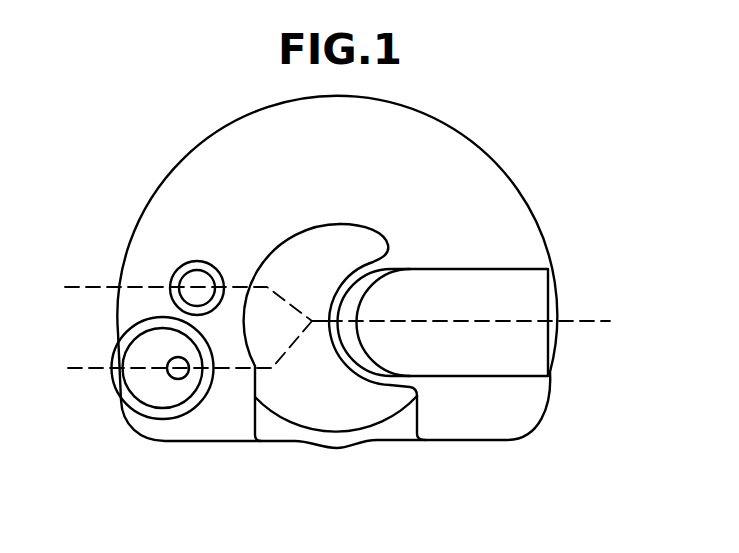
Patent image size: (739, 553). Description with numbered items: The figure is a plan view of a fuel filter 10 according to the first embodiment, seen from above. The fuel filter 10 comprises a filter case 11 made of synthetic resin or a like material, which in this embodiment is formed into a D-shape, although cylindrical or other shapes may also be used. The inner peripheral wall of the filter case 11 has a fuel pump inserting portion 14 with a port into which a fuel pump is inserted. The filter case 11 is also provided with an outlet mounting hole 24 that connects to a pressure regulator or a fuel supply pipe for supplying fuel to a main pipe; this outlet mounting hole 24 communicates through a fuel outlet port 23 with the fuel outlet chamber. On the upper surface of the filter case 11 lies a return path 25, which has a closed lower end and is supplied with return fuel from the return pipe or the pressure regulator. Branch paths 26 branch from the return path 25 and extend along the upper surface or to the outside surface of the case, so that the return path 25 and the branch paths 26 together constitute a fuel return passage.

The fuel filter 10 is at (548, 122).
The filter case 11 is at (507, 205).
The fuel pump inserting portion 14 is at (293, 393).
The fuel outlet port 23 is at (167, 371).
The outlet mounting hole 24 is at (160, 408).
The return path 25 is at (195, 261).
The branch paths 26 is at (172, 276).